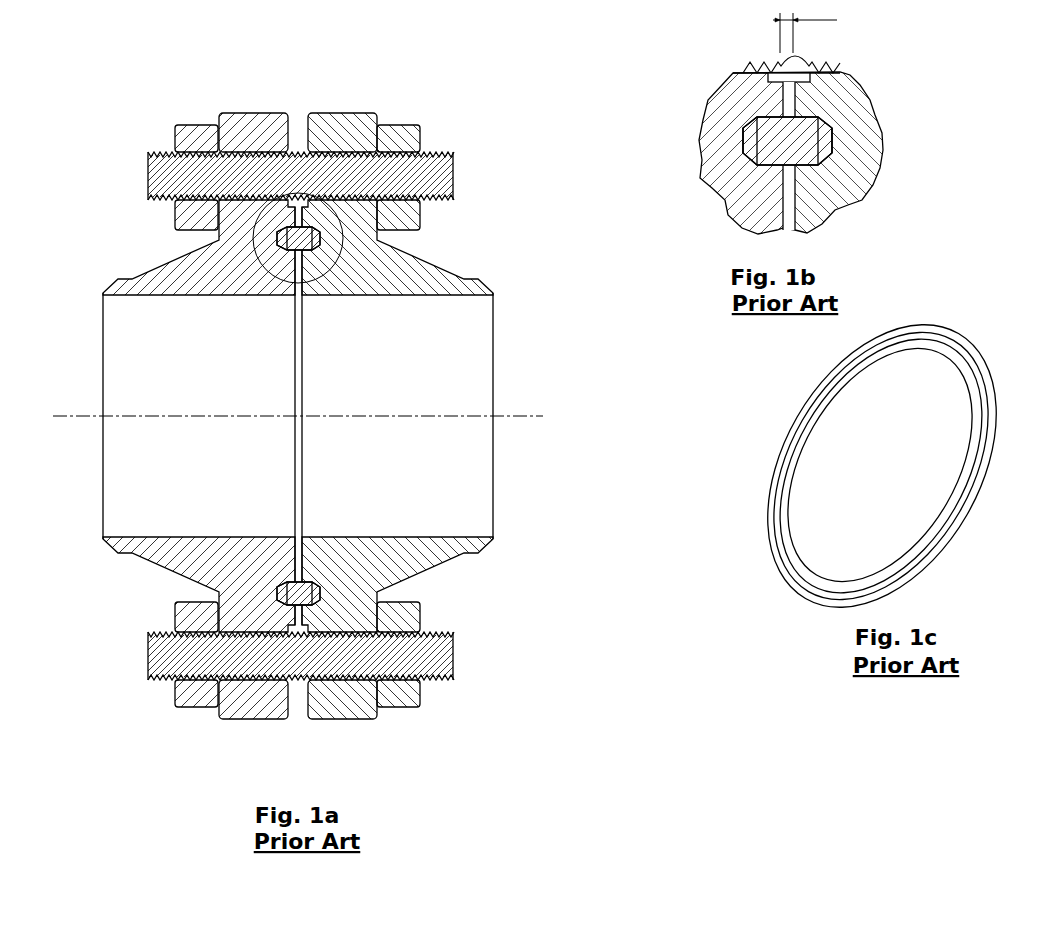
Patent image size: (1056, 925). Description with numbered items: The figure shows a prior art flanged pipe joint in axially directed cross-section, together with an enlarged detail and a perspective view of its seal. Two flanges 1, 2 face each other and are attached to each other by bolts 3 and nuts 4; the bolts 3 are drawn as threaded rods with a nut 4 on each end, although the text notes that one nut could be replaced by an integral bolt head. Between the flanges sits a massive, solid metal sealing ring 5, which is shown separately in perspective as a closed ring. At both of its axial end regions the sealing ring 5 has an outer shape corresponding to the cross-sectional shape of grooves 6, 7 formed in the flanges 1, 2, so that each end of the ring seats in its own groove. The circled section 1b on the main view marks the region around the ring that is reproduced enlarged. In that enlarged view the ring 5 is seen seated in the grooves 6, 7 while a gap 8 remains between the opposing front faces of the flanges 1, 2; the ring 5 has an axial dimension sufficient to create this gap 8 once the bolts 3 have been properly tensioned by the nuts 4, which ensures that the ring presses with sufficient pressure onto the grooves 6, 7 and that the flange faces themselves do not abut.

In FIG. 1A, the flange 1 is at (173, 280).
In FIG. 1B, the flange 1 is at (725, 127).
In FIG. 1A, the flange 2 is at (433, 283).
In FIG. 1B, the flange 2 is at (858, 167).
In FIG. 1A, the bolt 3 is at (165, 658).
In FIG. 1A, the nut 4 is at (402, 693).
In FIG. 1A, the sealing ring 5 is at (300, 233).
In FIG. 1B, the sealing ring 5 is at (797, 138).
In FIG. 1C, the sealing ring 5 is at (792, 445).
In FIG. 1B, the groove 6 is at (752, 147).
In FIG. 1B, the groove 7 is at (825, 142).
In FIG. 1B, the gap 8 is at (806, 26).
In FIG. 1A, the section 1b is at (262, 270).